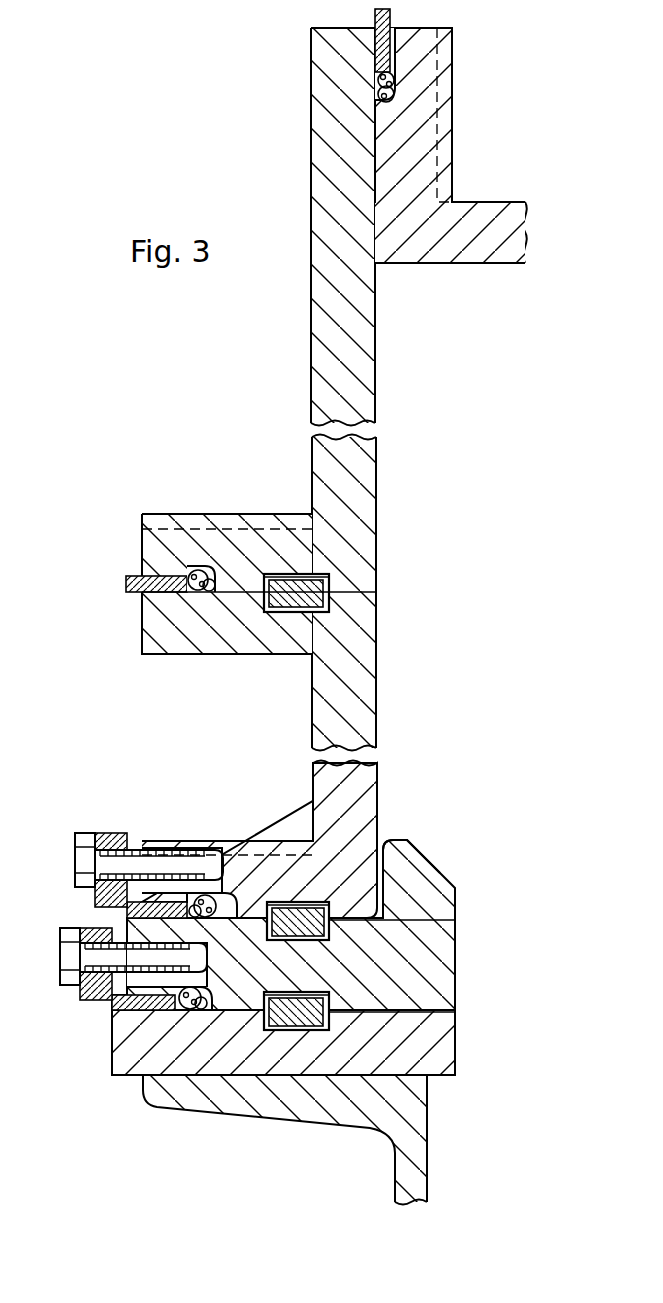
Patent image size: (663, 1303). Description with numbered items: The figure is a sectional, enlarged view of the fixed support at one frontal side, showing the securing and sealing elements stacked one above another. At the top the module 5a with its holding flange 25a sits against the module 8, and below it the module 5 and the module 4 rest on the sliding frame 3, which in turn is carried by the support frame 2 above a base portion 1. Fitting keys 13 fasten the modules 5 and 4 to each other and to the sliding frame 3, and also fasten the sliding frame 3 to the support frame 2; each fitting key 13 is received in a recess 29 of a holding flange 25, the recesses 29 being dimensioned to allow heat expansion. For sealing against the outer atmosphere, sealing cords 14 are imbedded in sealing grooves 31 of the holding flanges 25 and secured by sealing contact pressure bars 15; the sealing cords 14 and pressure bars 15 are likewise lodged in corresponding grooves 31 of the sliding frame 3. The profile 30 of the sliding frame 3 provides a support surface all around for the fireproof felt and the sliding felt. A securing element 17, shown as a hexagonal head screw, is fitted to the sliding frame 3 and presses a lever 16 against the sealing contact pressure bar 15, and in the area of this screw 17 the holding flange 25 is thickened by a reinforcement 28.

The base support 1 is at (415, 1105).
The support frame 2 is at (440, 1062).
The sliding frame 3 is at (432, 968).
The module 4 is at (324, 780).
The module 5 is at (320, 452).
The module 5a is at (318, 378).
The module 8 is at (403, 256).
The fitting key 13 is at (322, 596).
The sealing cord 14 is at (380, 100).
The sealing contact pressure bar 15 is at (378, 48).
The lever 16 is at (110, 833).
The securing element 17 is at (85, 835).
The holding flange 25 is at (422, 135).
The holding flange 25a is at (334, 135).
The reinforcement 28 is at (448, 90).
The recess 29 is at (330, 580).
The profile 30 is at (412, 845).
The sealing groove 31 is at (398, 82).